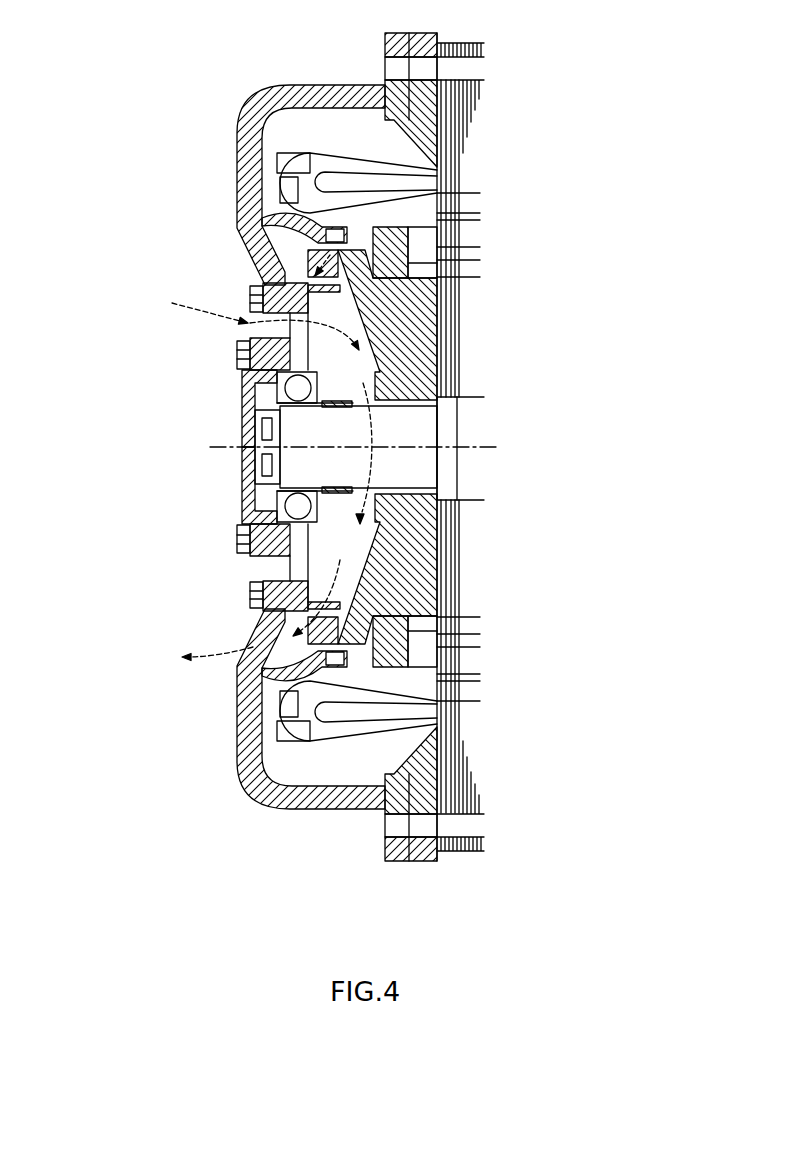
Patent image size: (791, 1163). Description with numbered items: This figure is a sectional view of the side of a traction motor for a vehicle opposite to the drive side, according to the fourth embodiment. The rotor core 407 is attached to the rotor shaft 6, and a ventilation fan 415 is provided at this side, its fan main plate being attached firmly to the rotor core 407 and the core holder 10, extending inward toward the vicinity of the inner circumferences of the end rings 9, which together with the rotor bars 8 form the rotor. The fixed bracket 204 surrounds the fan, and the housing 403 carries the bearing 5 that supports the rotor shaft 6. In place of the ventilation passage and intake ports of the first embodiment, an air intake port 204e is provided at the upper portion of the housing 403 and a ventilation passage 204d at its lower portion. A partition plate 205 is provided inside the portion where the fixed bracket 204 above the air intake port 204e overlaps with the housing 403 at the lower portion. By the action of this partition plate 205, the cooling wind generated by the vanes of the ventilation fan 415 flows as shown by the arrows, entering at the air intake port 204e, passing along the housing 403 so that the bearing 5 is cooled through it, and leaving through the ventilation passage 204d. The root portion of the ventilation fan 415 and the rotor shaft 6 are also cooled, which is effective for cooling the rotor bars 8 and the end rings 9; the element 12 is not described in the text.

The fixed bracket 204 is at (240, 160).
The partition plate 205 is at (318, 246).
The air intake port 204e is at (262, 328).
The ventilation passage 204d is at (268, 618).
The housing 403 is at (245, 380).
The rotor shaft 6 is at (450, 472).
The ventilation fan 415 is at (437, 425).
The core holder 10 is at (458, 343).
The end ring 9 is at (458, 277).
The rotor bar 8 is at (458, 247).
The rotor core 407 is at (470, 372).
The bearing 5 is at (458, 580).
The bracket 12 is at (437, 750).